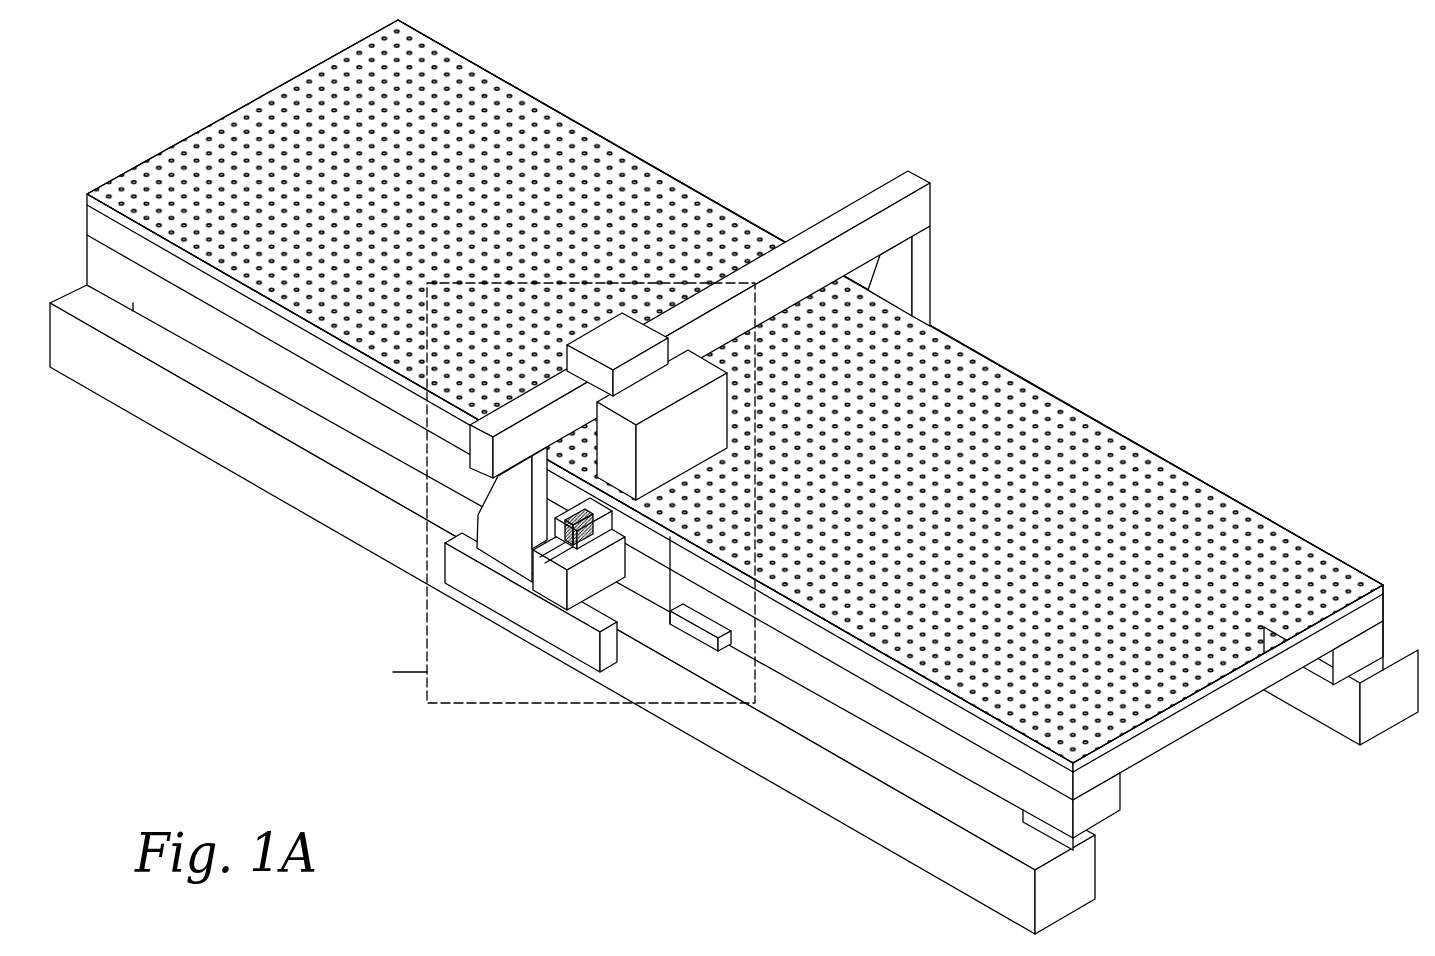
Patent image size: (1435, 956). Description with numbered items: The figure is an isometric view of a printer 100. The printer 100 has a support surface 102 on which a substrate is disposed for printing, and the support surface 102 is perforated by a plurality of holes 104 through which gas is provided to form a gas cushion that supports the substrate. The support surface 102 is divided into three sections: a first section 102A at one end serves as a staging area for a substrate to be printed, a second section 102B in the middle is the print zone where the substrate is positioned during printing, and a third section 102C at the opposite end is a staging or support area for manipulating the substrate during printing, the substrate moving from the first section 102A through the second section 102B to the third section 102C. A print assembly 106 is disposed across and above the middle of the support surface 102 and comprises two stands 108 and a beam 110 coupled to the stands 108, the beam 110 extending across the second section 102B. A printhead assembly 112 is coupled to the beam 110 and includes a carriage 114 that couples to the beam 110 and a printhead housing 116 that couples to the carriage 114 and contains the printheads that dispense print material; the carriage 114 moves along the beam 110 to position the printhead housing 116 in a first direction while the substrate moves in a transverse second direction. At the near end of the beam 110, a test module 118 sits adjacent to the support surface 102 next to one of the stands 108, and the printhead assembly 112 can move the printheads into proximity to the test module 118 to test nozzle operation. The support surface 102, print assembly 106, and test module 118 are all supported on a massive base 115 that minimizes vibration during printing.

The printer 100 is at (734, 477).
The support surface 102 is at (735, 435).
The first section 102A is at (1131, 441).
The second section 102B is at (951, 338).
The third section 102C is at (505, 79).
The holes 104 is at (605, 146).
The print assembly 106 is at (698, 353).
The stands 108 is at (932, 263).
The beam 110 is at (870, 196).
The printhead assembly 112 is at (688, 389).
The carriage 114 is at (638, 350).
The massive base 115 is at (920, 869).
The printhead housing 116 is at (700, 445).
The test module 118 is at (553, 542).